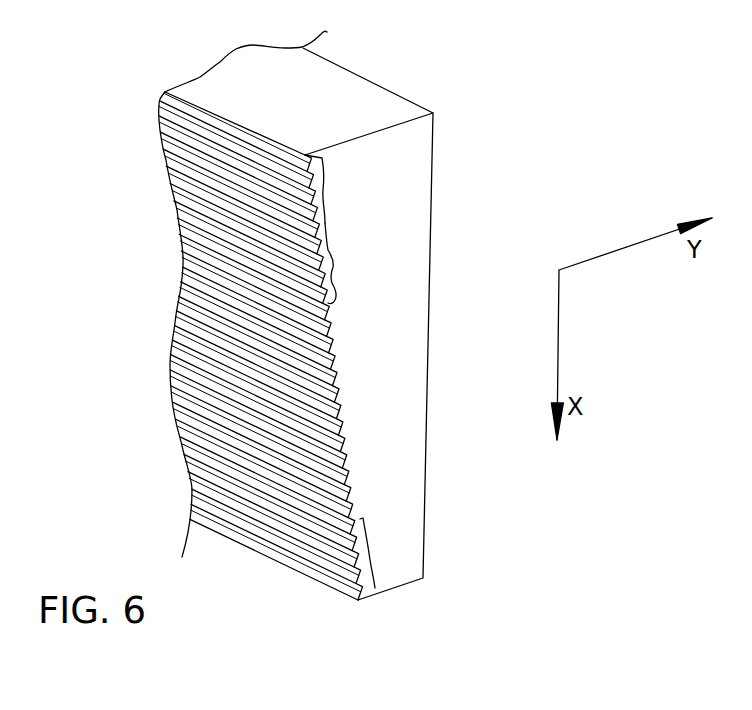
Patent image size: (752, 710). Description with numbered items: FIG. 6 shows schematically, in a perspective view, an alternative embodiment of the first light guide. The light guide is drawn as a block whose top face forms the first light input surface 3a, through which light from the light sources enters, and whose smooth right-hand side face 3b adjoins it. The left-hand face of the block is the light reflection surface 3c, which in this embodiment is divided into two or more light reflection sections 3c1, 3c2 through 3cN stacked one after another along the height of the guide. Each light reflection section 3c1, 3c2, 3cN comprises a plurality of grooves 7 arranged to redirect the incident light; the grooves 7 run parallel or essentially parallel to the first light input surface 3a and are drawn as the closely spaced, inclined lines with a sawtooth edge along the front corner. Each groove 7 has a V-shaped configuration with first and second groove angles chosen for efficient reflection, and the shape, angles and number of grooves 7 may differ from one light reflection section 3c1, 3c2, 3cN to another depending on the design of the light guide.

The first light input surface 3a is at (325, 105).
The side surface 3b is at (380, 322).
The light reflection surface 3c is at (226, 346).
The first light reflection section 3c1 is at (330, 192).
The second light reflection section 3c2 is at (333, 267).
The N-th light reflection section 3cN is at (373, 558).
The grooves 7 is at (197, 338).